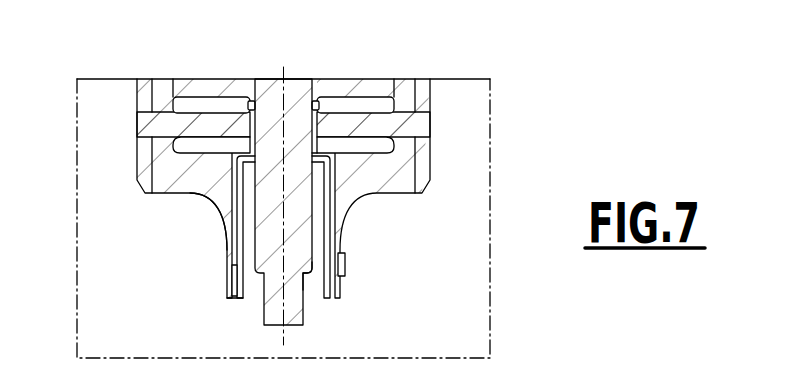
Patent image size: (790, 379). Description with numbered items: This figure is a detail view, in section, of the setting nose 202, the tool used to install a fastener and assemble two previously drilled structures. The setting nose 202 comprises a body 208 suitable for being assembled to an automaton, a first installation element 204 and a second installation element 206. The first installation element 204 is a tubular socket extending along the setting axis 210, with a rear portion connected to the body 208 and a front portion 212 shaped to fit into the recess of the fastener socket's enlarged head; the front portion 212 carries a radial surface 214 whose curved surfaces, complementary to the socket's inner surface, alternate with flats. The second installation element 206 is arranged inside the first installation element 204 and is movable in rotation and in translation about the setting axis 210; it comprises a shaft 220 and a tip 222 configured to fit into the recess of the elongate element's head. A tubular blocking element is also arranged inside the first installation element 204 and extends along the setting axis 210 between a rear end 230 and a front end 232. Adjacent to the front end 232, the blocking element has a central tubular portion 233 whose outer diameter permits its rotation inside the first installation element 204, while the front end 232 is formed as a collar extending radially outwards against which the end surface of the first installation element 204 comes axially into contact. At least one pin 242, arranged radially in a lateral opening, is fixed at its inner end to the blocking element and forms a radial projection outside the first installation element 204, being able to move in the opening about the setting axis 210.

The setting nose 202 is at (283, 218).
The first installation element 204 is at (217, 253).
The second installation element 206 is at (342, 162).
The body 208 is at (152, 163).
The setting axis 210 is at (285, 343).
The front portion 212 is at (217, 295).
The radial surface 214 is at (345, 275).
The shaft 220 is at (238, 190).
The tip 222 is at (304, 308).
The rear end 230 is at (318, 120).
The front end 232 is at (253, 300).
The central tubular portion 233 is at (340, 234).
The pin 242 is at (410, 128).